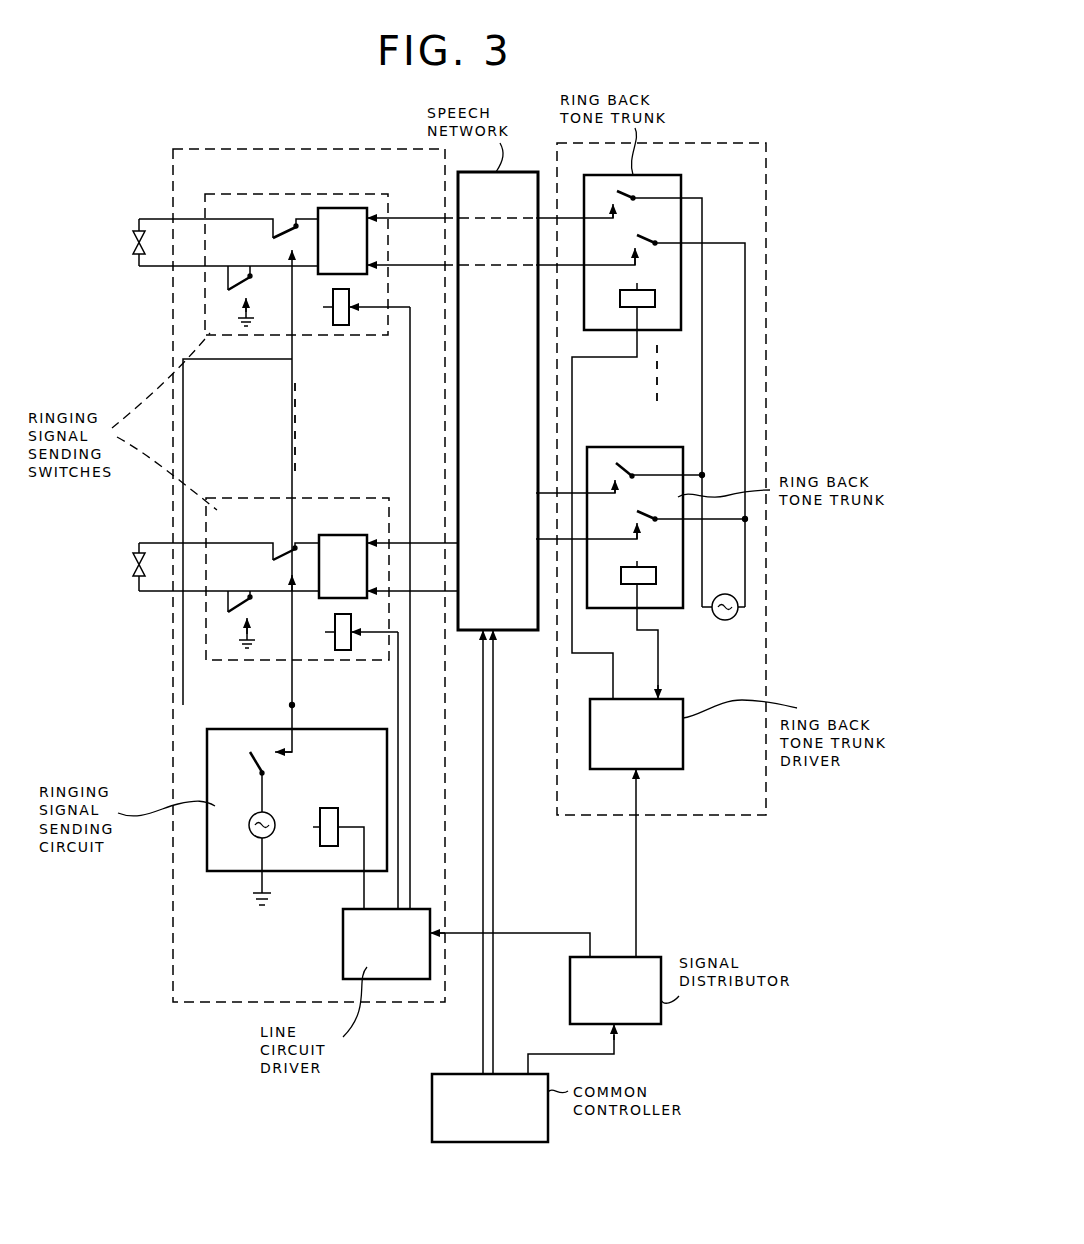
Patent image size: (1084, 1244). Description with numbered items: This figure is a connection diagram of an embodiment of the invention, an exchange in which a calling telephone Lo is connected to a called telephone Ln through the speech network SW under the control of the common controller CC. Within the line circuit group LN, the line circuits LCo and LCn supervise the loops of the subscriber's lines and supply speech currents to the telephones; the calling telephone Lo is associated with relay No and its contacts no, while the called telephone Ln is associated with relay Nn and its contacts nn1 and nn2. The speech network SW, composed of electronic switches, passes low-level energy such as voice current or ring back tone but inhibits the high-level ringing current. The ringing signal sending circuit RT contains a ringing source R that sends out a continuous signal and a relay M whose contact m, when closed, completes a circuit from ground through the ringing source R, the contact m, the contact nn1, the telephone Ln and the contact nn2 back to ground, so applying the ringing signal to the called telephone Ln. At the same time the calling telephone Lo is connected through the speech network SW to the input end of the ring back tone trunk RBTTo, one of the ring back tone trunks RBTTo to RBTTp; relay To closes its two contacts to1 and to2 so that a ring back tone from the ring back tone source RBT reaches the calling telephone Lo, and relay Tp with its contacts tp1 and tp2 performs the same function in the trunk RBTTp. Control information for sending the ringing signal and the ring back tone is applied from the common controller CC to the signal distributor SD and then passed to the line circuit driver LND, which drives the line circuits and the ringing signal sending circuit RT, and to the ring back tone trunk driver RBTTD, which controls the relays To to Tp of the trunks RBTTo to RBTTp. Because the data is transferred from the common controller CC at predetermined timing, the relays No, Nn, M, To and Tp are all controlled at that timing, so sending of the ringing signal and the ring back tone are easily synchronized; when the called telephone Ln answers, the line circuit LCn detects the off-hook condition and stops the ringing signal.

The line circuit group LN is at (178, 150).
The calling telephone Lo is at (152, 242).
The called telephone Ln is at (152, 567).
The contacts of relay No no is at (273, 275).
The contact of relay Nn nn1 is at (270, 563).
The contact of relay Nn nn2 is at (257, 621).
The line circuit LCo is at (342, 241).
The line circuit LCn is at (343, 566).
The relay No is at (356, 302).
The relay Nn is at (351, 627).
The speech network SW is at (498, 401).
The ringing signal sending circuit RT is at (313, 729).
The contact of relay M m is at (260, 752).
The ringing source R is at (250, 839).
The relay M is at (330, 843).
The line circuit driver LND is at (386, 944).
The signal distributor SD is at (615, 990).
The common controller CC is at (490, 1108).
The ring back tone trunk RBTTo is at (658, 175).
The ring back tone trunk RBTTp is at (621, 447).
The contact of relay To to1 is at (619, 393).
The contact of relay To to2 is at (640, 416).
The relay To is at (613, 483).
The contact of relay Tp tp1 is at (620, 472).
The contact of relay Tp tp2 is at (642, 521).
The relay Tp is at (626, 622).
The ring back tone source RBT is at (723, 619).
The ring back tone trunk driver RBTTD is at (636, 734).